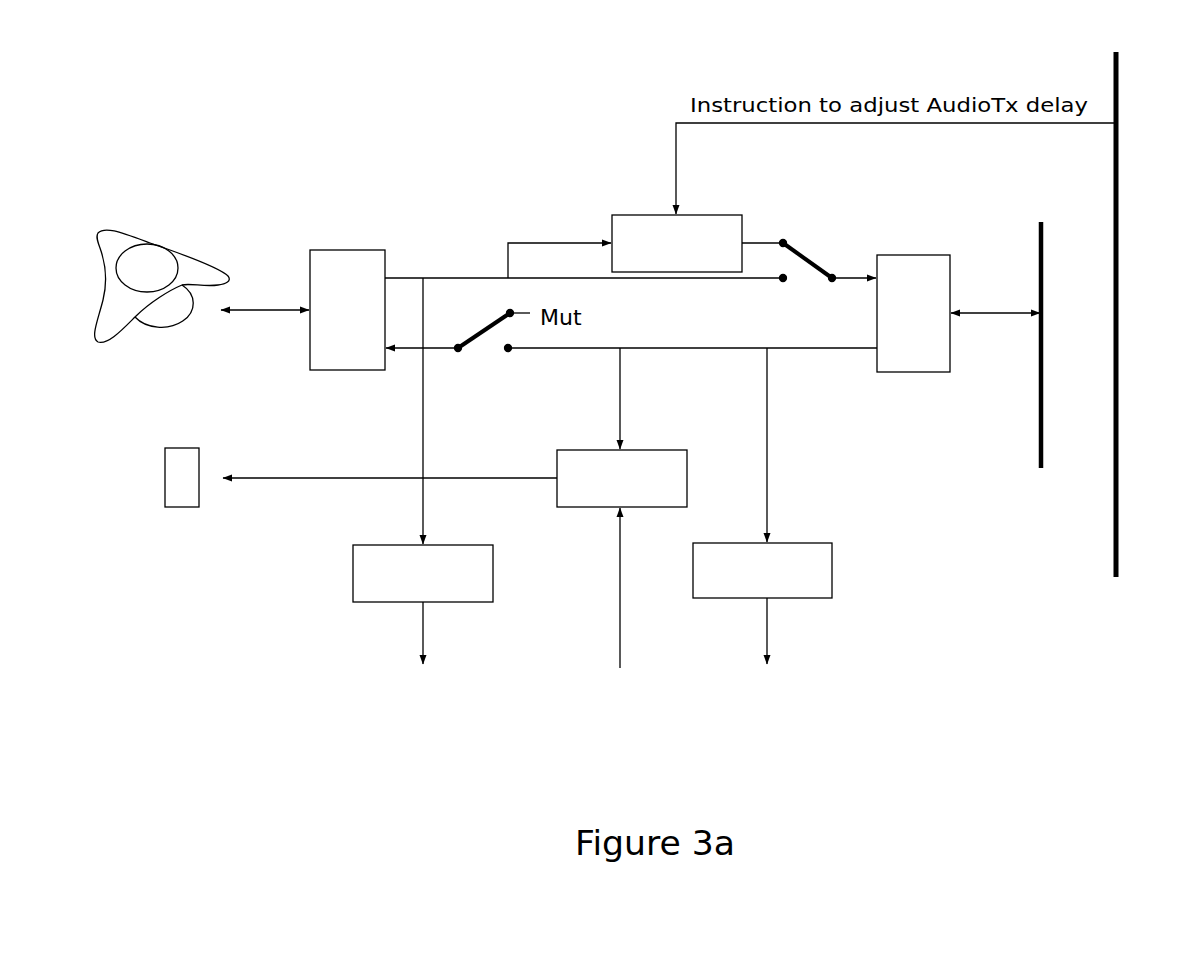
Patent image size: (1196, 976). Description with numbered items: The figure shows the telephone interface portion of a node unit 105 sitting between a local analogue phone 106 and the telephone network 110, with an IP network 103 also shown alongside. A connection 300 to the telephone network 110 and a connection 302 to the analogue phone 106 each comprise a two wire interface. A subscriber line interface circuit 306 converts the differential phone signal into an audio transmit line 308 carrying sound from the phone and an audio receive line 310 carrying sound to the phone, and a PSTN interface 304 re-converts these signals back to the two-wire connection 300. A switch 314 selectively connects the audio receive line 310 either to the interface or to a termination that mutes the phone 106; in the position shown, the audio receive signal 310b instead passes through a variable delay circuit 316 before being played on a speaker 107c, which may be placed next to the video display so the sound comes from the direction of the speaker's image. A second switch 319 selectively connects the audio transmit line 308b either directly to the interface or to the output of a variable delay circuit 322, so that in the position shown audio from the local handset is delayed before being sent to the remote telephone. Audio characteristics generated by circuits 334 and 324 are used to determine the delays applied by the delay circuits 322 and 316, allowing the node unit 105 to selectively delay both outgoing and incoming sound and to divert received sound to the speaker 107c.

The IP network 103 is at (1108, 596).
The node unit 105 is at (320, 786).
The analogue phone 106 is at (167, 215).
The speaker 107c is at (160, 541).
The telephone network 110 is at (1033, 481).
The connection to the telephone network 300 is at (990, 336).
The connection to analogue phone 302 is at (268, 328).
The PSTN interface 304 is at (900, 358).
The subscriber line interface circuit 306 is at (342, 360).
The audio transmit line 308 is at (406, 265).
The audio transmit line 308b is at (856, 264).
The audio receive line 310 is at (403, 361).
The audio receive signal 310b is at (725, 356).
The switch 314 is at (487, 366).
The variable delay circuit 316 is at (585, 514).
The second switch 319 is at (816, 242).
The variable delay circuit 322 is at (721, 211).
The audio characteristic circuit 324 is at (713, 611).
The audio characteristic circuit 334 is at (365, 616).